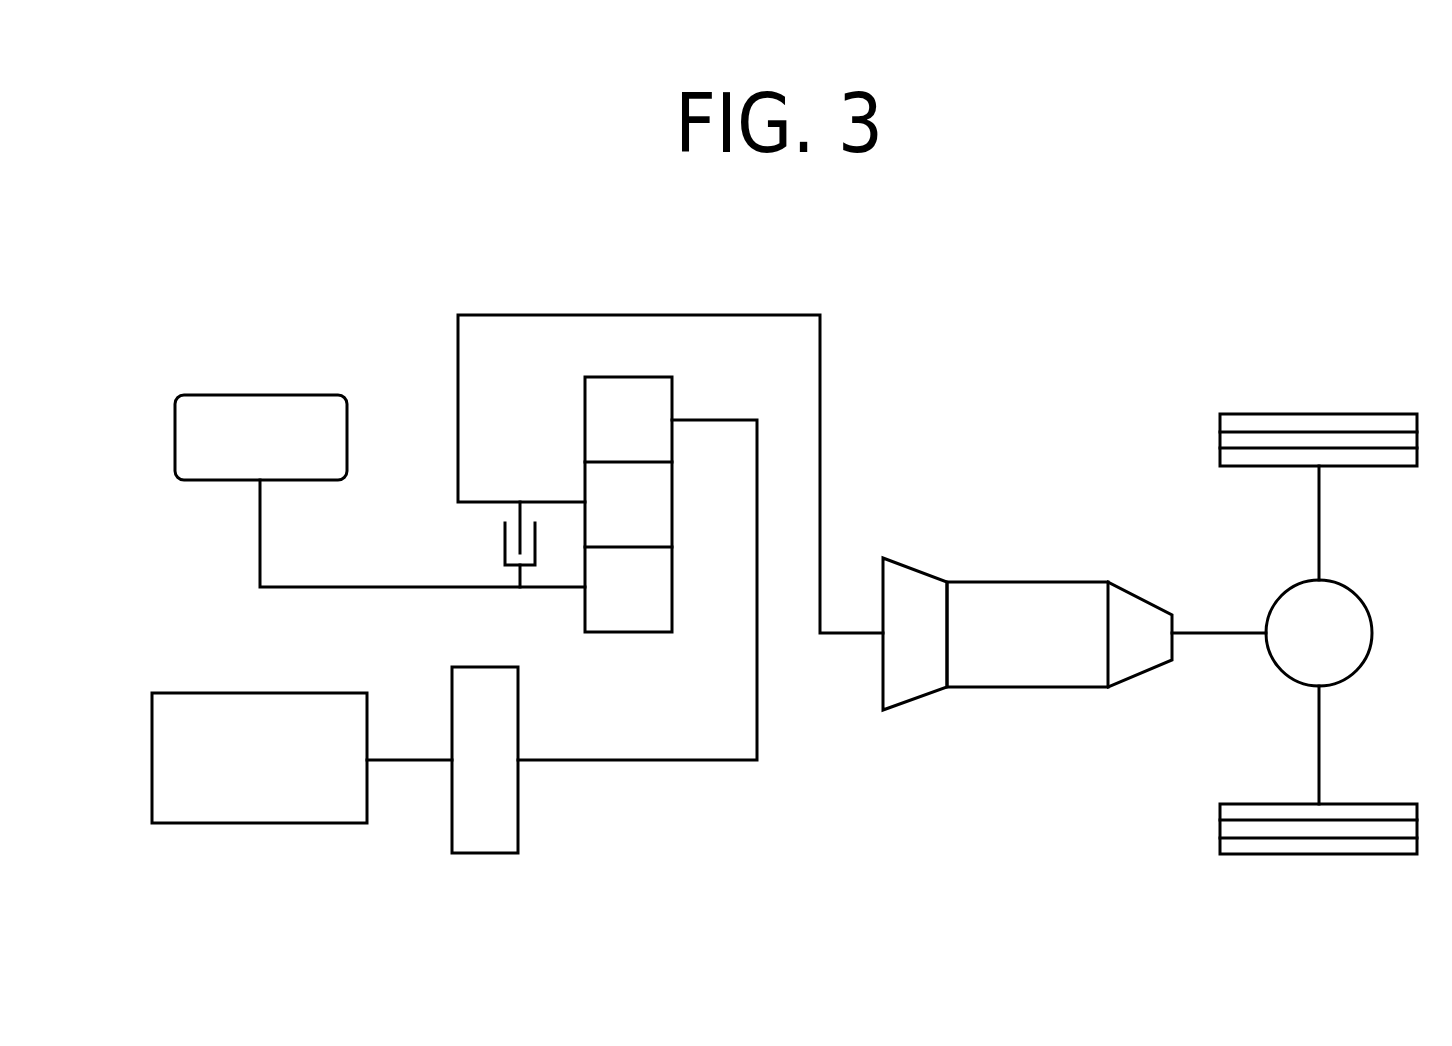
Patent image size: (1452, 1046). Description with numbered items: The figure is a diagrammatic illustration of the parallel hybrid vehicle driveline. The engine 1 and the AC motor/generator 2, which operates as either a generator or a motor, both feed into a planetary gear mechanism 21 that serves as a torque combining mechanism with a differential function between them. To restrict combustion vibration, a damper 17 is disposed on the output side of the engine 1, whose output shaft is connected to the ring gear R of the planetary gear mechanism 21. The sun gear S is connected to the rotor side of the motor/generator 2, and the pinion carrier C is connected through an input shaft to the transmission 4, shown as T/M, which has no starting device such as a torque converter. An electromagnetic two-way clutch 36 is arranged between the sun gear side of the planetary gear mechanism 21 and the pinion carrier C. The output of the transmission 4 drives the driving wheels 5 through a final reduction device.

The engine 1 is at (241, 693).
The motor/generator 2 is at (270, 395).
The transmission 4 is at (1030, 582).
The driving wheel 5 is at (1366, 414).
The damper 17 is at (518, 712).
The planetary gear mechanism 21 is at (690, 577).
The electromagnetic two-way clutch 36 is at (501, 543).